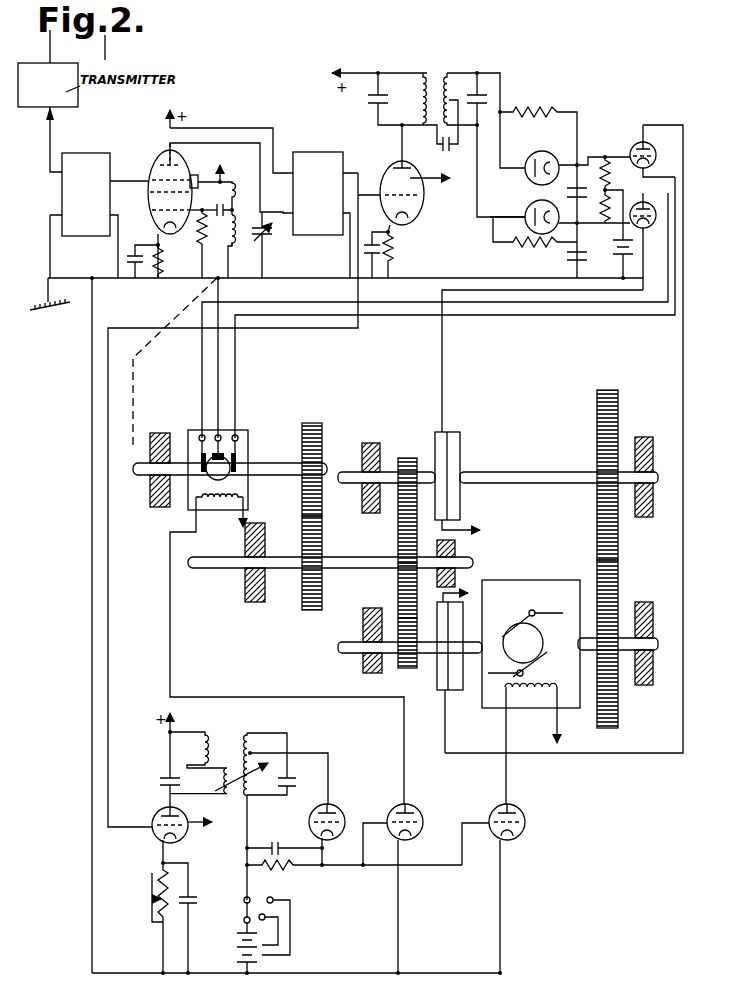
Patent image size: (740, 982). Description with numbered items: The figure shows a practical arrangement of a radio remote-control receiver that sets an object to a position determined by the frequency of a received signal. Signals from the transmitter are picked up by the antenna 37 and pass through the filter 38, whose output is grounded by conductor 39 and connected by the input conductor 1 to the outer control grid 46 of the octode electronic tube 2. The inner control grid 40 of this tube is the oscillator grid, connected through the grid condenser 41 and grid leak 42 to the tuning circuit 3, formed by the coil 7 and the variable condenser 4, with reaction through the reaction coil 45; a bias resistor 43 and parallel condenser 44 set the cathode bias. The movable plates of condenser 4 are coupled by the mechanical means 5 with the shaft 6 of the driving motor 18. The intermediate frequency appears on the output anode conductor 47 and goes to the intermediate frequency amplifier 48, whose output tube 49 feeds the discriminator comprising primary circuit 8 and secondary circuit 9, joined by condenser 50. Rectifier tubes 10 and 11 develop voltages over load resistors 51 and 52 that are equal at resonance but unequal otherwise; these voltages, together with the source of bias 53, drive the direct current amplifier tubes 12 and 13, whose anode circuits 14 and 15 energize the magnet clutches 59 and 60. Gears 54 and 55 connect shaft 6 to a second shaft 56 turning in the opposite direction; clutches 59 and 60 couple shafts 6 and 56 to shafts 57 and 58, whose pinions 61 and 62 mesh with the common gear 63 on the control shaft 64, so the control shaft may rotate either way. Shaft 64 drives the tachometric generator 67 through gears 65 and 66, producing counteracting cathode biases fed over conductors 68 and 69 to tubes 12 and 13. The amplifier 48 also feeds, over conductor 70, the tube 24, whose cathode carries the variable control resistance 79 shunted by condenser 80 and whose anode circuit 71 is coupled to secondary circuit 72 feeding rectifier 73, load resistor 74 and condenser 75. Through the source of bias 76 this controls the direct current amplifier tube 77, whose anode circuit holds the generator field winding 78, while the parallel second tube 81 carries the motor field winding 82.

The input conductor 1 is at (121, 181).
The electronic tube 2 is at (160, 152).
The tuning circuit 3 is at (240, 243).
The variable condenser 4 is at (270, 241).
The mechanical means 5 is at (190, 306).
The shaft 6 is at (590, 655).
The coil 7 is at (240, 246).
The primary circuit 8 is at (397, 99).
The secondary circuit 9 is at (484, 144).
The rectifier tube 10 is at (536, 152).
The rectifier tube 11 is at (530, 204).
The direct current amplifier tube 12 is at (636, 146).
The direct current amplifier tube 13 is at (637, 204).
The anode circuit 14 is at (688, 344).
The anode circuit 15 is at (467, 288).
The driving motor 18 is at (541, 606).
The tube 24 is at (190, 832).
The antenna 37 is at (50, 134).
The filter 38 is at (93, 157).
The conductor 39 is at (127, 258).
The inner control grid 40 is at (152, 207).
The grid condenser 41 is at (226, 208).
The grid leak 42 is at (206, 247).
The bias resistor 43 is at (164, 262).
The condenser 44 is at (150, 243).
The reaction coil 45 is at (234, 180).
The outer control grid 46 is at (155, 183).
The output anode conductor 47 is at (216, 143).
The intermediate frequency amplifier 48 is at (306, 152).
The amplifier tube 49 is at (404, 228).
The condenser 50 is at (450, 156).
The load resistor 51 is at (608, 170).
The load resistor 52 is at (602, 208).
The source of bias 53 is at (616, 246).
The gear 54 is at (618, 594).
The gear 55 is at (618, 424).
The second shaft 56 is at (520, 471).
The shaft 57 is at (432, 655).
The shaft 58 is at (424, 471).
The magnet clutch 59 is at (455, 692).
The magnet clutch 60 is at (462, 443).
The pinion 61 is at (406, 669).
The pinion 62 is at (402, 457).
The common gear 63 is at (398, 557).
The control shaft 64 is at (385, 571).
The gear 65 is at (323, 549).
The gear 66 is at (323, 433).
The tachometric generator 67 is at (248, 432).
The conductor 68 is at (392, 317).
The conductor 69 is at (383, 300).
The conductor 70 is at (330, 330).
The circuit 71 is at (197, 762).
The secondary circuit 72 is at (271, 768).
The rectifier 73 is at (333, 811).
The load resistor 74 is at (285, 869).
The condenser 75 is at (279, 841).
The source of bias 76 is at (232, 942).
The direct current amplifier tube 77 is at (414, 812).
The field winding 78 is at (228, 503).
The variable control resistance 79 is at (150, 886).
The condenser 80 is at (193, 897).
The second tube 81 is at (497, 810).
The field winding 82 is at (532, 698).